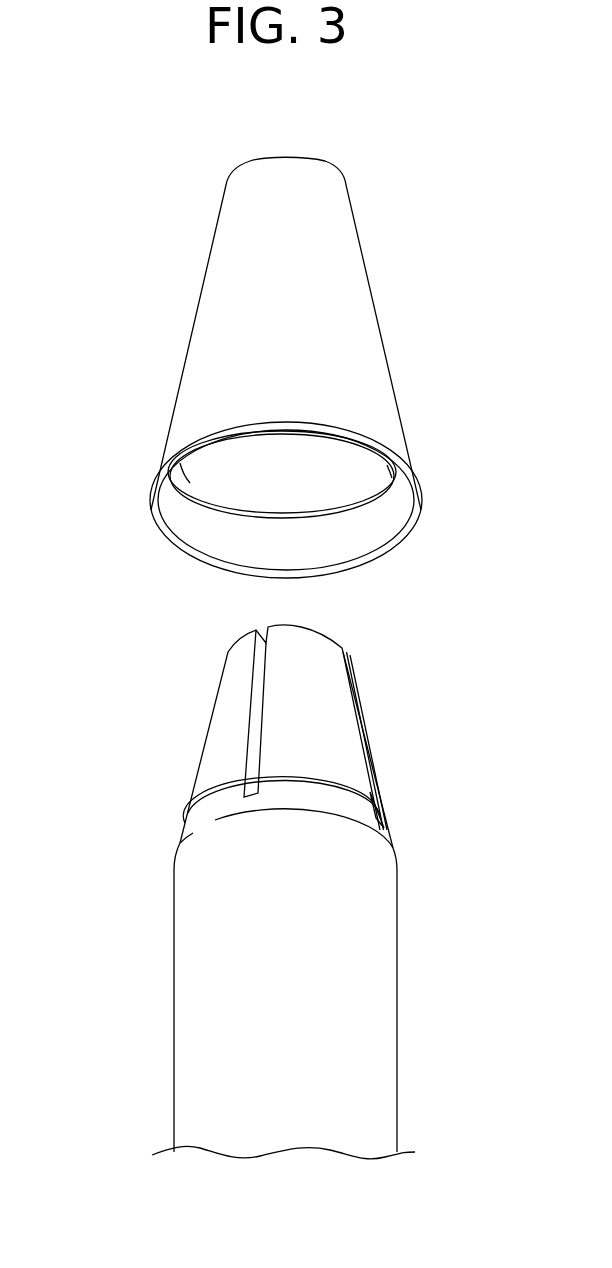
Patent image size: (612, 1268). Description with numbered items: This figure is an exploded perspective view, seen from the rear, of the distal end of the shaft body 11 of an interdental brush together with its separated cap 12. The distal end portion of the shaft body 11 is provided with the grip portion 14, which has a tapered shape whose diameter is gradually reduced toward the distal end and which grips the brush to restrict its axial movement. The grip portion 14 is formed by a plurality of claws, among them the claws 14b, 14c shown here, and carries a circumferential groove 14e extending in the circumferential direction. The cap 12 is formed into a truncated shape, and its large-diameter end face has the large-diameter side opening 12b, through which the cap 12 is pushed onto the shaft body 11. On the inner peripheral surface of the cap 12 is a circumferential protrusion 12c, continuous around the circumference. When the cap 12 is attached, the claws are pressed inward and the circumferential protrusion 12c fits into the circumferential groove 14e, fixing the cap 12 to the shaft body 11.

The shaft body 11 is at (397, 1000).
The cap 12 is at (375, 305).
The large-diameter side opening 12b is at (332, 525).
The circumferential protrusion 12c is at (225, 507).
The grip portion 14 is at (457, 742).
The claw 14b is at (227, 732).
The claw 14c is at (332, 711).
The circumferential groove 14e is at (352, 792).